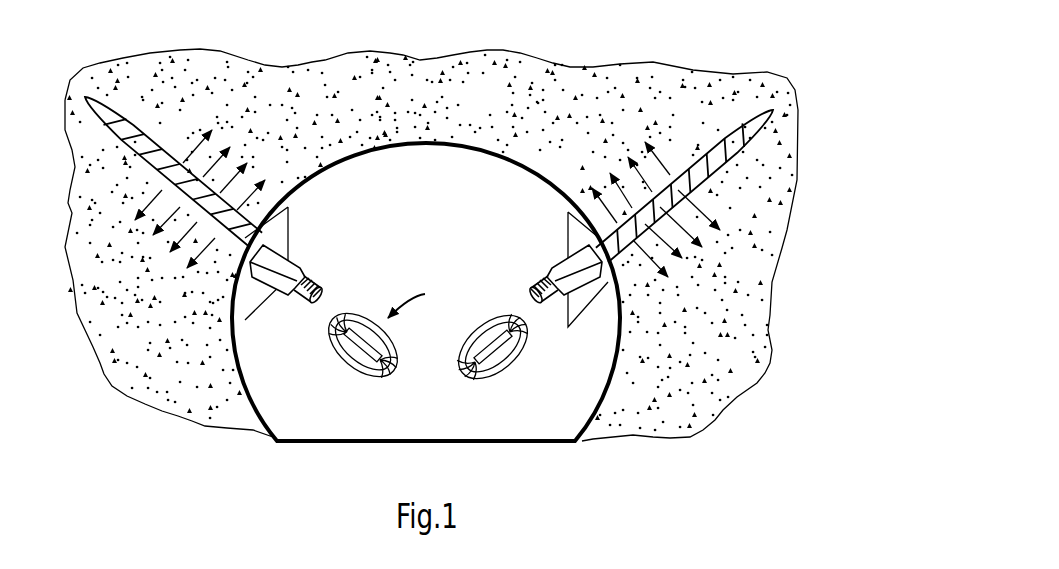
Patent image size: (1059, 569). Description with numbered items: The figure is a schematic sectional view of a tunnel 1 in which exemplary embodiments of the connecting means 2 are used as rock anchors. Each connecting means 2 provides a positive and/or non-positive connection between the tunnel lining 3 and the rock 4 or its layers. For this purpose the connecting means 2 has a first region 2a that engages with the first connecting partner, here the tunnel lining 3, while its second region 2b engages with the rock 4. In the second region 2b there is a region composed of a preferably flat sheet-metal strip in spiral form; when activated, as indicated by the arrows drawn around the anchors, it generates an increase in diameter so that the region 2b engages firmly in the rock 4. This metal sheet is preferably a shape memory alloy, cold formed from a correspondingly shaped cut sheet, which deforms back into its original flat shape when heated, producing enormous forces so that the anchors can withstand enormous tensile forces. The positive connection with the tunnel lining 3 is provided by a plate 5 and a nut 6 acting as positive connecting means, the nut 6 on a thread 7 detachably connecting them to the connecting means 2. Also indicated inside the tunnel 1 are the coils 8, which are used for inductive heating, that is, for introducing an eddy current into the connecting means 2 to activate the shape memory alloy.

The tunnel 1 is at (374, 242).
The connecting means 2 is at (164, 138).
The first region 2a is at (426, 296).
The second region 2b is at (126, 121).
The tunnel lining 3 is at (463, 148).
The rock 4 is at (476, 109).
The plate 5 is at (577, 240).
The nut 6 is at (563, 268).
The thread 7 is at (545, 293).
The coils 8 is at (475, 318).